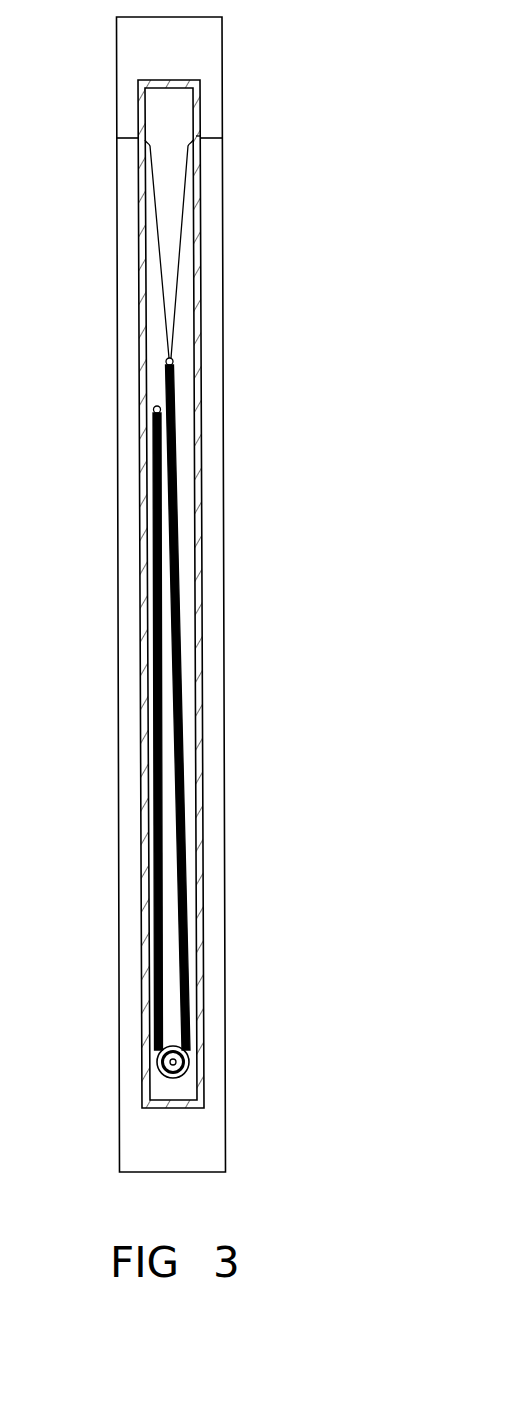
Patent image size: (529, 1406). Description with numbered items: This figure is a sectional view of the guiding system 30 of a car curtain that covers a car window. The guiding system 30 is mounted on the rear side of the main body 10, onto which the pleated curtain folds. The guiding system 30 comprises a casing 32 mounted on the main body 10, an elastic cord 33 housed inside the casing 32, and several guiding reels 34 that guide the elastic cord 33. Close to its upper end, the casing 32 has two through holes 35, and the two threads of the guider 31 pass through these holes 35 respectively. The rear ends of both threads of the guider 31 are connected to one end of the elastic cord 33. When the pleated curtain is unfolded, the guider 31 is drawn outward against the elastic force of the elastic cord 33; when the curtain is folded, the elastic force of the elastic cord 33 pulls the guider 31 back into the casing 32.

The main body 10 is at (208, 311).
The guiding system 30 is at (226, 679).
The guider 31 is at (188, 182).
The casing 32 is at (140, 313).
The elastic cord 33 is at (174, 413).
The guiding reels 34 is at (186, 1062).
The through holes 35 is at (200, 138).